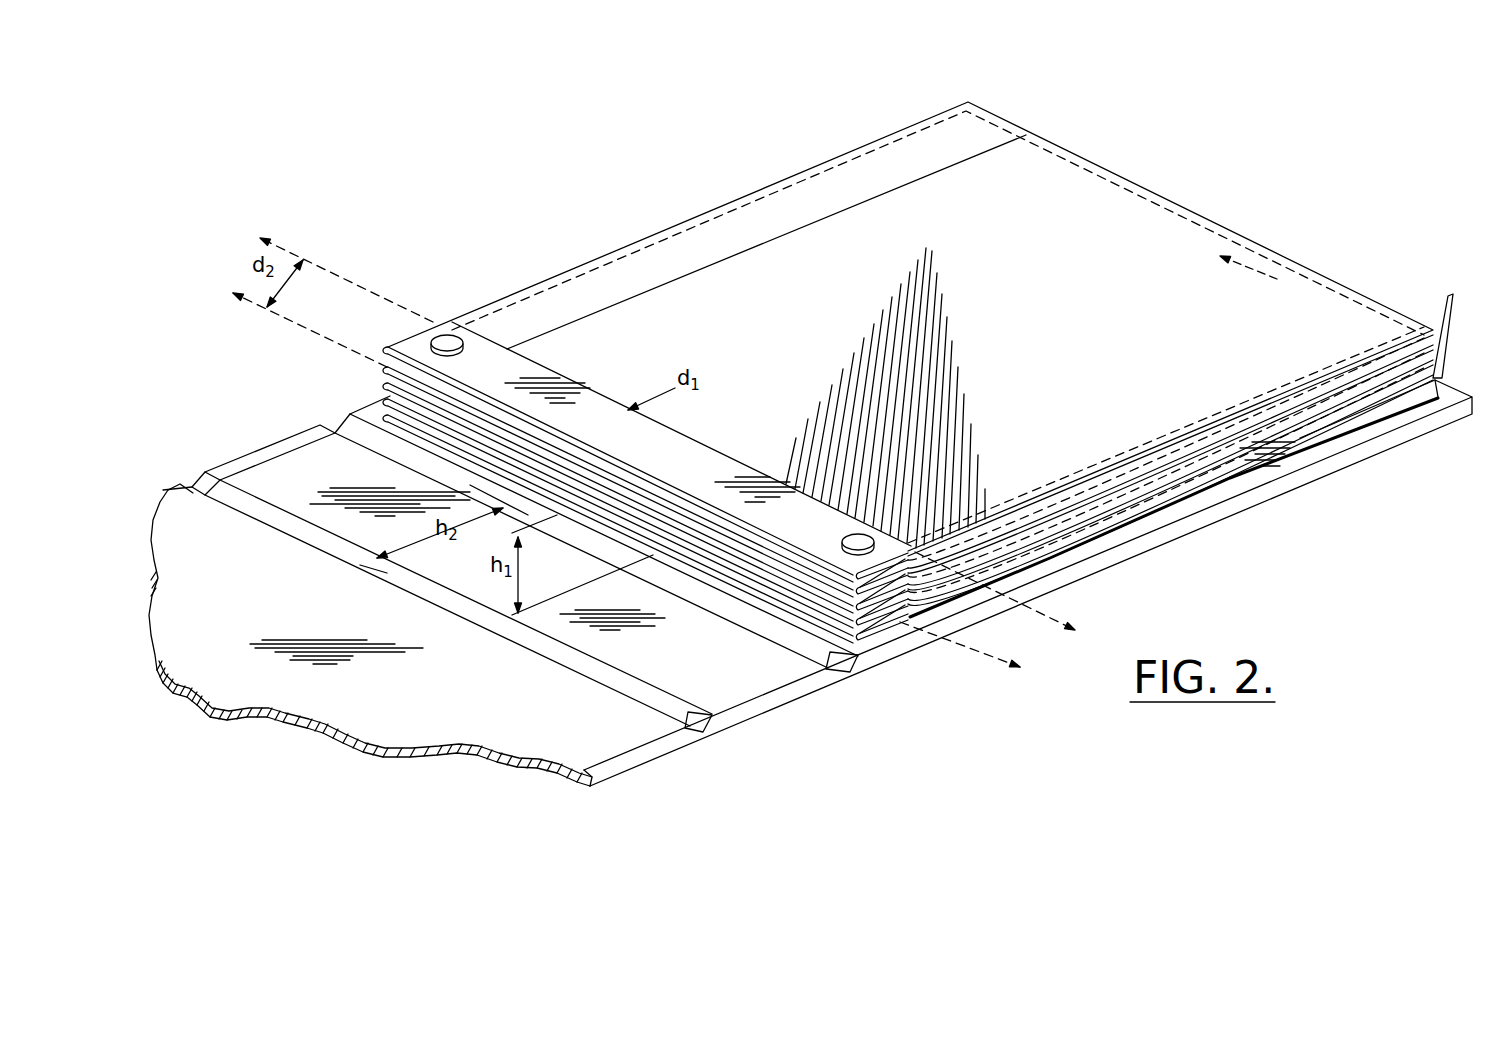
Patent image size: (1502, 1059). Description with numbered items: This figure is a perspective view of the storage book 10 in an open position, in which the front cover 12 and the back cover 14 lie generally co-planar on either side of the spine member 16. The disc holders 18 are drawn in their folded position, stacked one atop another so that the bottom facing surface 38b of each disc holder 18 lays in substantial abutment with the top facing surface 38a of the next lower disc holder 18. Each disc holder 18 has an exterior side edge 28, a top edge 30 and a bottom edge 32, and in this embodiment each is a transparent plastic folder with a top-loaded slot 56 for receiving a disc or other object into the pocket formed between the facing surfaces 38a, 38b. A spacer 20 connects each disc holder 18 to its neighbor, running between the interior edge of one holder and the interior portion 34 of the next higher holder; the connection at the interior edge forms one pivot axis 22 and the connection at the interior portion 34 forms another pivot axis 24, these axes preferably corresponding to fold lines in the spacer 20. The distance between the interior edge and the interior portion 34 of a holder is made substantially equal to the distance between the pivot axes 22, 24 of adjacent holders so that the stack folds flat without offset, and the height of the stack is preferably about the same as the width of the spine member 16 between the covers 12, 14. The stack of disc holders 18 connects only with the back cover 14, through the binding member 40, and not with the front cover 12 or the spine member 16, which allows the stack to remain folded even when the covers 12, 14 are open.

The storage book 10 is at (677, 147).
The front cover 12 is at (418, 710).
The back cover 14 is at (1306, 468).
The spine member 16 is at (730, 672).
The disc holder 18 is at (1443, 302).
The spacer 20 is at (860, 622).
The pivot axis 22 is at (308, 331).
The pivot axis 24 is at (357, 282).
The exterior side edge 28 is at (1358, 292).
The top edge 30 is at (931, 120).
The bottom edge 32 is at (1187, 430).
The interior portion 34 is at (728, 458).
The top facing surface 38a is at (1170, 243).
The bottom facing surface 38b is at (1277, 279).
The binding member 40 is at (680, 447).
The top-loaded slot 56 is at (983, 150).